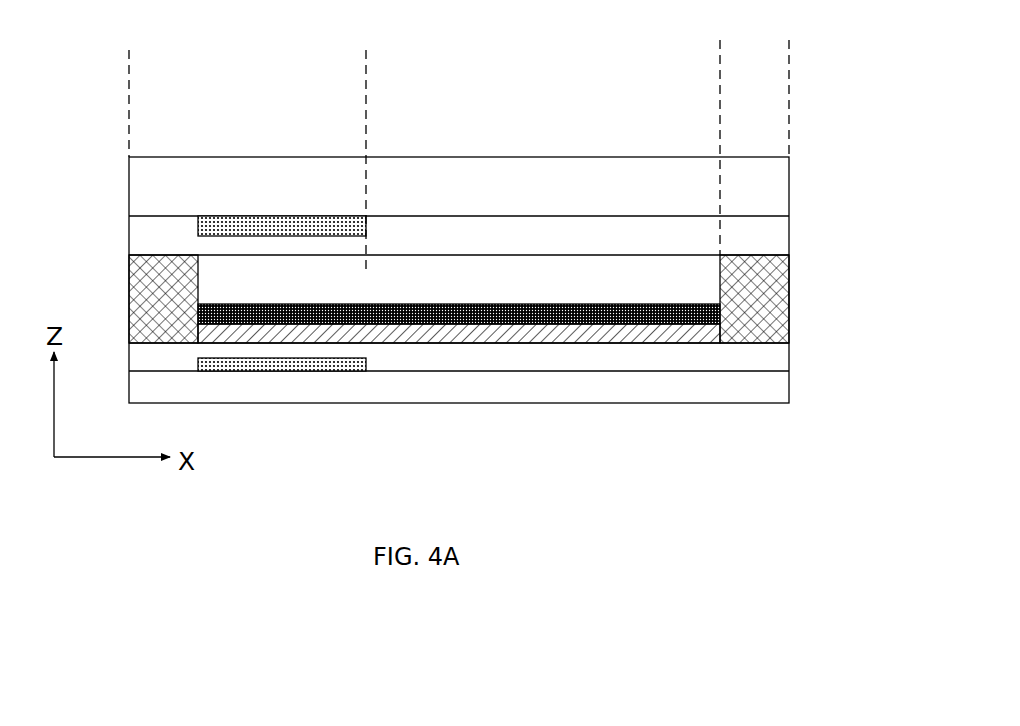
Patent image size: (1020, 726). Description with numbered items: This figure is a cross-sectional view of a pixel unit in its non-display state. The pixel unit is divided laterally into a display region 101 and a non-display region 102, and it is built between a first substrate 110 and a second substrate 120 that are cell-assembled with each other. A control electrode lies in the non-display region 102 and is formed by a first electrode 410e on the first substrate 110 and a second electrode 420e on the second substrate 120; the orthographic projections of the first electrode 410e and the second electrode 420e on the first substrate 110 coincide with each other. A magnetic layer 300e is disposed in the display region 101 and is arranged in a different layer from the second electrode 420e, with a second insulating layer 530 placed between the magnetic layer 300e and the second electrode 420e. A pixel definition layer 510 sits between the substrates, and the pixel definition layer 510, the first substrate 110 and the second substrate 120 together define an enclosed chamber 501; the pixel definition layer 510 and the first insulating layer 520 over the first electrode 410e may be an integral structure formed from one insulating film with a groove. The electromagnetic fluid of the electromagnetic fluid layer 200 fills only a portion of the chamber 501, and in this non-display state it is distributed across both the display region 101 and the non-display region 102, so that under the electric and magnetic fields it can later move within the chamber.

The display region 101 is at (720, 81).
The non-display region 102 is at (366, 68).
The first substrate 110 is at (403, 197).
The second substrate 120 is at (430, 380).
The electromagnetic fluid layer 200 is at (630, 313).
The magnetic layer 300e is at (517, 333).
The first electrode 410e is at (228, 222).
The second electrode 420e is at (260, 363).
The chamber 501 is at (510, 269).
The pixel definition layer 510 is at (160, 308).
The first insulating layer 520 is at (780, 240).
The second insulating layer 530 is at (772, 361).